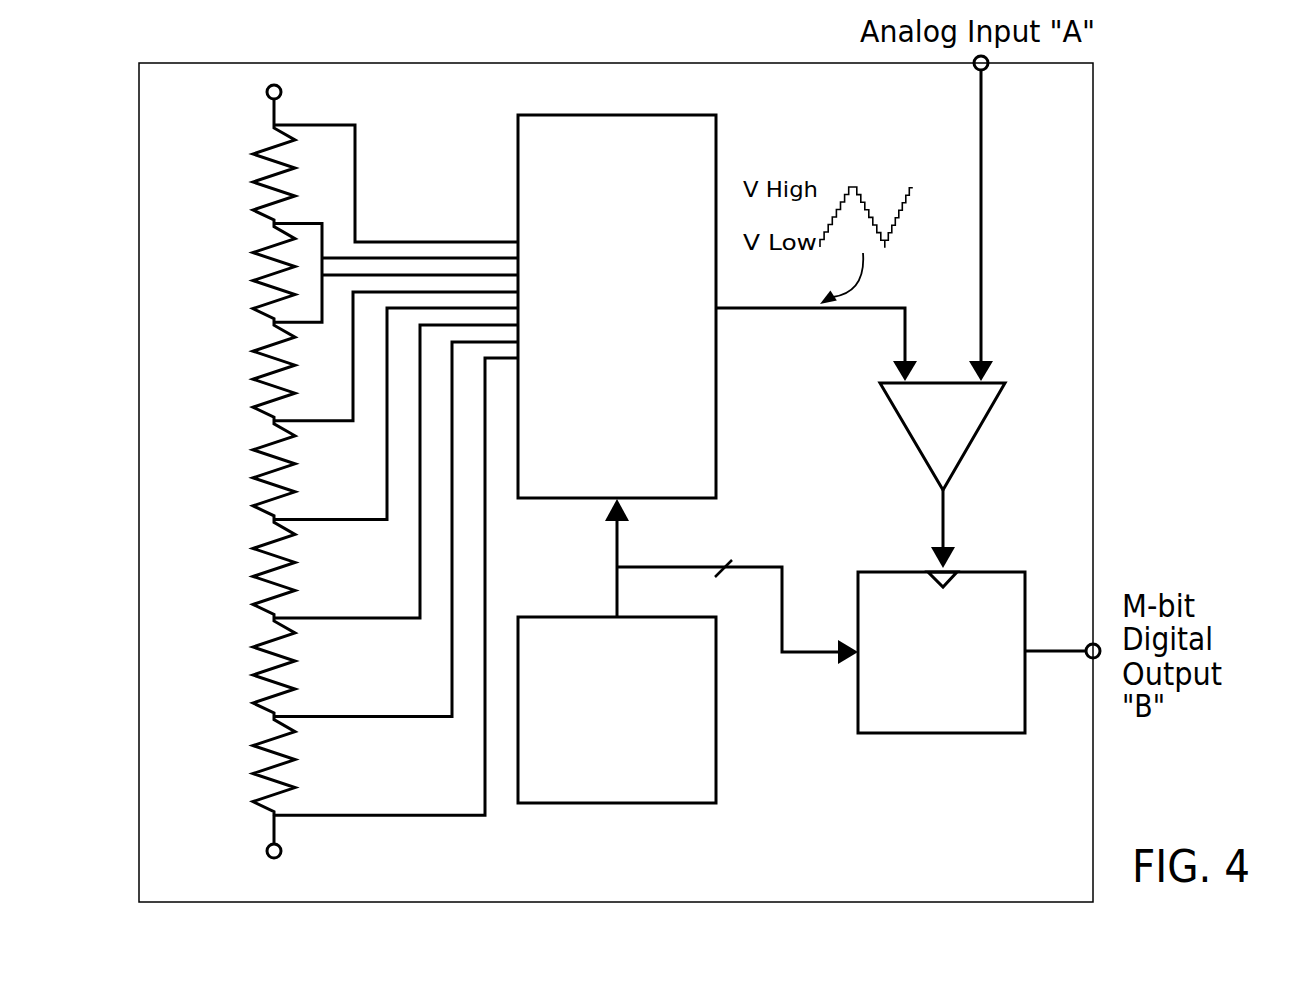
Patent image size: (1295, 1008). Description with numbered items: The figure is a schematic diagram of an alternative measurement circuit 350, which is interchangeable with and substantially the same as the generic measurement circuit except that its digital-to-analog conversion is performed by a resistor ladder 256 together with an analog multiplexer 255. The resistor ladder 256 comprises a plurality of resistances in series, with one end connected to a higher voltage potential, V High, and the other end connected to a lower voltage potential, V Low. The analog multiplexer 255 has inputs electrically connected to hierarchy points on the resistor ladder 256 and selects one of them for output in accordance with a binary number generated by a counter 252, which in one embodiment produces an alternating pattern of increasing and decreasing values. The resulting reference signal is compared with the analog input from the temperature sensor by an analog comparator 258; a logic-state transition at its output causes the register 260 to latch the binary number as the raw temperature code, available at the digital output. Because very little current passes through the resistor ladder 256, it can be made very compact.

The measurement circuit 350 is at (616, 464).
The resistor ladder 256 is at (388, 217).
The analog multiplexer 255 is at (717, 306).
The analog comparator 258 is at (977, 433).
The register 260 is at (979, 652).
The counter 252 is at (688, 651).